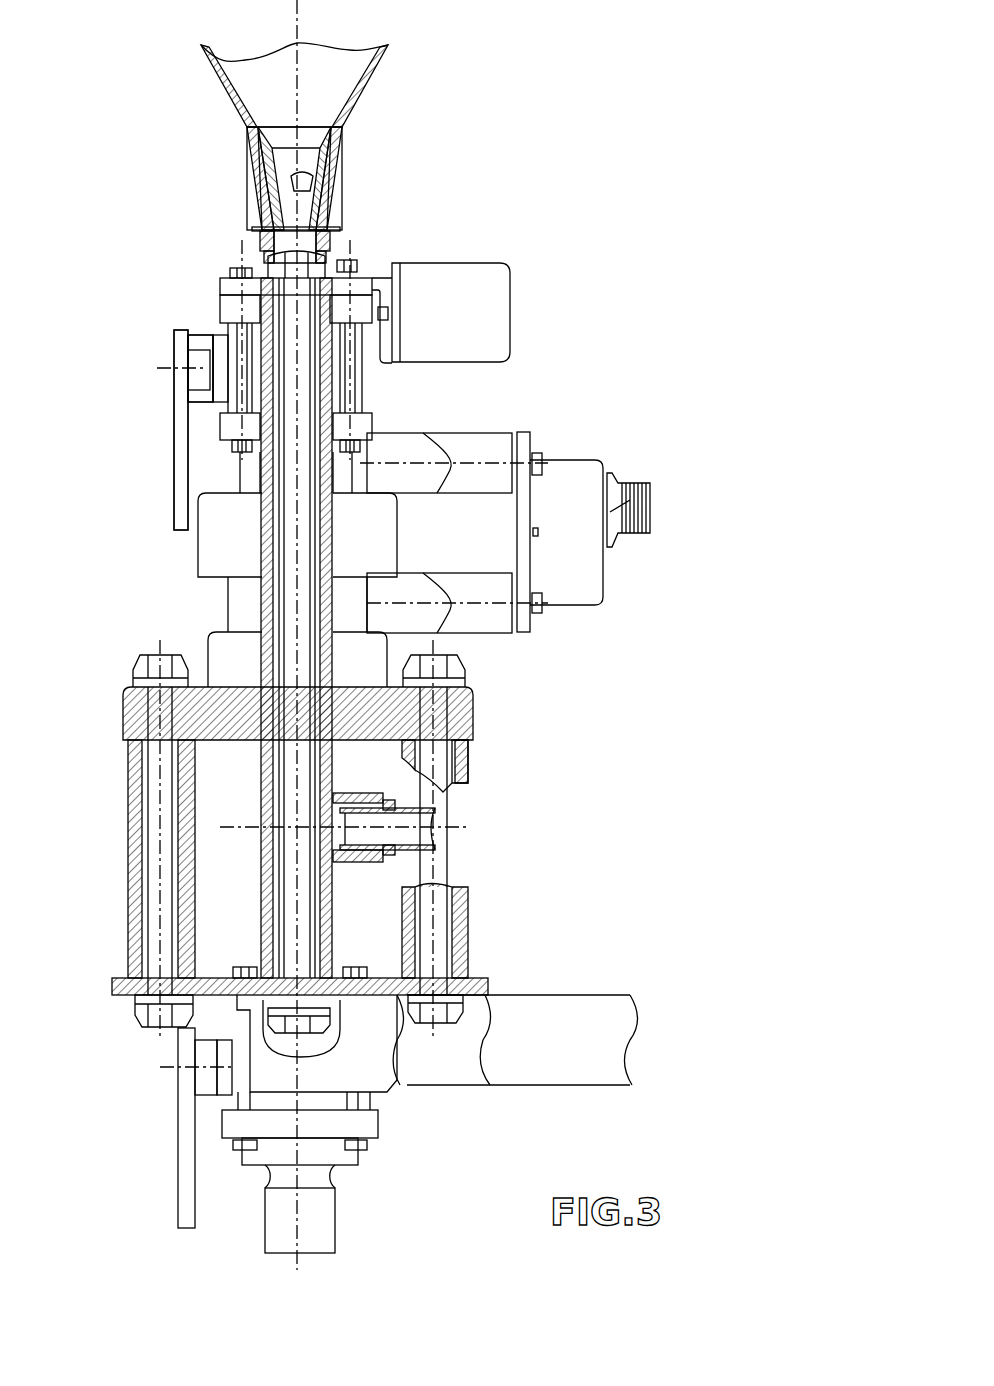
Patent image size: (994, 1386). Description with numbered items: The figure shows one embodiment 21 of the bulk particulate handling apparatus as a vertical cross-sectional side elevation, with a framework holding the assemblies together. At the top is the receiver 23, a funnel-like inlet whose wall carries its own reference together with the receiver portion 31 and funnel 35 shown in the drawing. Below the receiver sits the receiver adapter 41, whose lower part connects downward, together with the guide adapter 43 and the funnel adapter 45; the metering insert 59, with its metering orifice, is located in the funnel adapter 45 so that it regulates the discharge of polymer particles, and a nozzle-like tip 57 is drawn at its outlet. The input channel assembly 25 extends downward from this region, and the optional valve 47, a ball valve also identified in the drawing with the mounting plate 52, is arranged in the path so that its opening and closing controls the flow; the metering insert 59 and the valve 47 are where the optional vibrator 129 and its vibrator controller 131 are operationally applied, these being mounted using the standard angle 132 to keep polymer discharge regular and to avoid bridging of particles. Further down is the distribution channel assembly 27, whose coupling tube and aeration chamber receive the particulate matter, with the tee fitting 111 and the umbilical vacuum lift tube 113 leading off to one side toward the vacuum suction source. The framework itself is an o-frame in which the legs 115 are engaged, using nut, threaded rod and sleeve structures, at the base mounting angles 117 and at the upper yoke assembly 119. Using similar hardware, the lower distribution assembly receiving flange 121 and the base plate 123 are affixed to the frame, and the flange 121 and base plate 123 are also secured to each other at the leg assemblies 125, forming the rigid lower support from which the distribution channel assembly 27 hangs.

The embodiment of the apparatus 21 is at (600, 312).
The receiver 23 is at (318, 85).
The input channel assembly 25 is at (307, 335).
The distribution channel assembly 27 is at (132, 577).
The funnel insert 31 is at (343, 157).
The funnel 35 is at (248, 75).
The receiver adapter 41 is at (260, 222).
The guide adapter 43 is at (263, 237).
The funnel adapter 45 is at (273, 163).
The valve 47 is at (180, 373).
The mounting plate 52 is at (193, 430).
The nozzle tip 57 is at (305, 180).
The metering insert 59 is at (250, 157).
The tee fitting 111 is at (435, 795).
The umbilical vacuum lift tube 113 is at (425, 848).
The legs 115 is at (290, 457).
The base mounting angles 117 is at (620, 1040).
The upper yoke assembly 119 is at (237, 287).
The lower distribution assembly receiving flange 121 is at (472, 710).
The base plate 123 is at (480, 978).
The leg assemblies 125 is at (468, 760).
The vibrator 129 is at (468, 347).
The vibrator controller 131 is at (570, 470).
The standard angle 132 is at (390, 267).